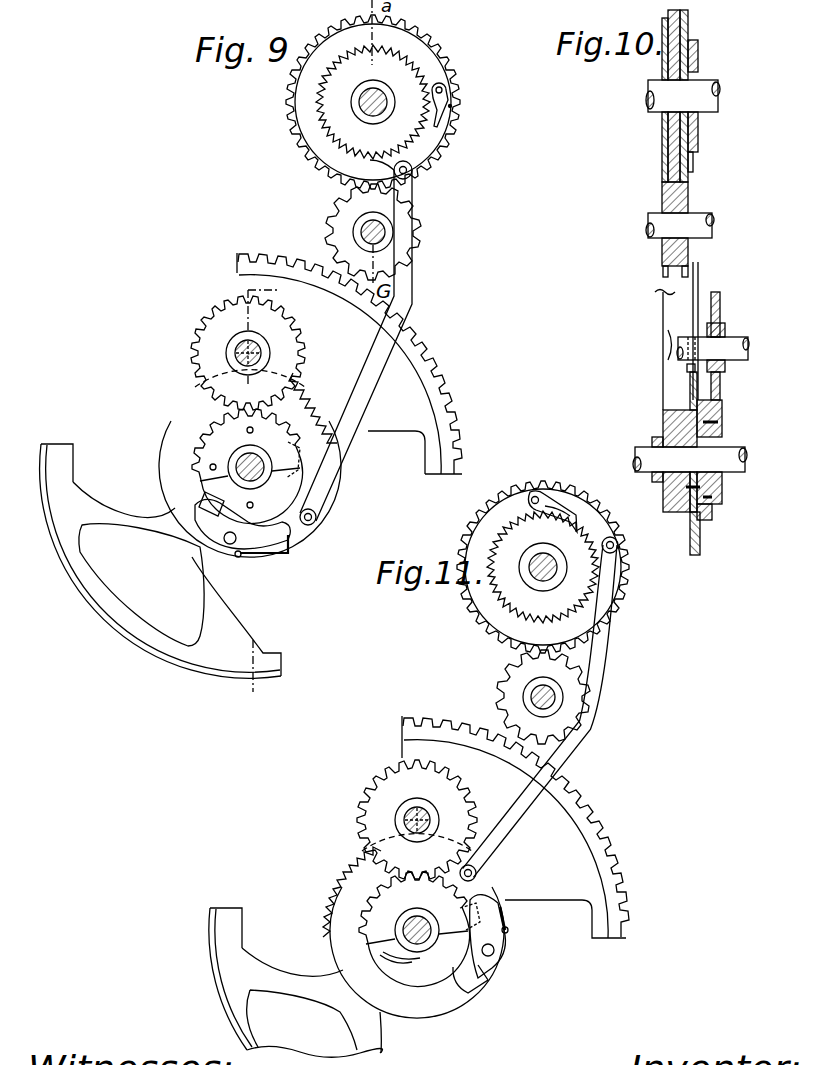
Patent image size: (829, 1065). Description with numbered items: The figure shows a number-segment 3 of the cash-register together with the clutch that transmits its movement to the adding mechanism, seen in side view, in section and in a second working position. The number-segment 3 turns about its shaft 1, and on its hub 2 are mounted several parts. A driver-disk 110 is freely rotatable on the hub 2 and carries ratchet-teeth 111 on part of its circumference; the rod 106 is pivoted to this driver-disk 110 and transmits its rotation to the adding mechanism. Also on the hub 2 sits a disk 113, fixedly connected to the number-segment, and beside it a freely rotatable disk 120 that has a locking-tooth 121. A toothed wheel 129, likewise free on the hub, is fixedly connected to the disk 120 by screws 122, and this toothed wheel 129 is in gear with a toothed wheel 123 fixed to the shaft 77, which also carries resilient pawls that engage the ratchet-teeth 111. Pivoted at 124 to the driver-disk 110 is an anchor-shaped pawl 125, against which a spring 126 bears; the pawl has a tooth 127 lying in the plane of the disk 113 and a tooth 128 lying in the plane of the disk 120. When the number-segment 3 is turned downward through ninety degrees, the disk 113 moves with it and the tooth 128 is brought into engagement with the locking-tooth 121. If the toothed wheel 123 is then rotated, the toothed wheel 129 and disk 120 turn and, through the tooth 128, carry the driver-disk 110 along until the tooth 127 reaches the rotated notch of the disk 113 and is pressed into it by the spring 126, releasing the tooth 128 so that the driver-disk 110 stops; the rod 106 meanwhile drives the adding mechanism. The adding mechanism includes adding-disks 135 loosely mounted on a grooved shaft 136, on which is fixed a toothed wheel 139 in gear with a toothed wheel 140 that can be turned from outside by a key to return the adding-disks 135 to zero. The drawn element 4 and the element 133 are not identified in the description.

In FIG. 9, the shaft 1 is at (250, 458).
In FIG. 11, the shaft 1 is at (425, 918).
In FIG. 9, the number-segment hub 2 is at (260, 480).
In FIG. 10, the number-segment hub 2 is at (745, 478).
In FIG. 11, the number-segment hub 2 is at (400, 925).
In FIG. 9, the number-segment 3 is at (160, 585).
In FIG. 11, the number-segment 3 is at (242, 1013).
In FIG. 9, the toothed sector plate 4 is at (349, 363).
In FIG. 10, the toothed sector plate 4 is at (668, 304).
In FIG. 11, the toothed sector plate 4 is at (515, 827).
In FIG. 9, the shaft 77 is at (262, 352).
In FIG. 10, the shaft 77 is at (748, 349).
In FIG. 11, the shaft 77 is at (432, 820).
In FIG. 9, the rod 106 is at (412, 283).
In FIG. 10, the rod 106 is at (700, 279).
In FIG. 11, the rod 106 is at (600, 658).
In FIG. 9, the driver-disk 110 is at (172, 440).
In FIG. 10, the driver-disk 110 is at (692, 538).
In FIG. 11, the driver-disk 110 is at (338, 945).
In FIG. 9, the ratchet-teeth 111 is at (313, 413).
In FIG. 10, the ratchet-teeth 111 is at (690, 378).
In FIG. 11, the ratchet-teeth 111 is at (352, 880).
In FIG. 10, the disk 113 is at (705, 512).
In FIG. 11, the disk 113 is at (382, 955).
In FIG. 9, the disk 120 is at (222, 490).
In FIG. 10, the disk 120 is at (722, 500).
In FIG. 11, the disk 120 is at (412, 970).
In FIG. 11, the locking-tooth 121 is at (383, 952).
In FIG. 10, the screws 122 is at (718, 423).
In FIG. 9, the toothed wheel 123 is at (275, 327).
In FIG. 10, the toothed wheel 123 is at (722, 310).
In FIG. 11, the toothed wheel 123 is at (432, 778).
In FIG. 9, the pivot 124 is at (230, 545).
In FIG. 11, the pivot 124 is at (495, 950).
In FIG. 9, the anchor-shaped pawl 125 is at (285, 547).
In FIG. 11, the anchor-shaped pawl 125 is at (490, 968).
In FIG. 9, the spring 126 is at (247, 560).
In FIG. 11, the spring 126 is at (507, 930).
In FIG. 9, the tooth 127 is at (290, 523).
In FIG. 11, the tooth 127 is at (497, 900).
In FIG. 9, the tooth 128 is at (212, 500).
In FIG. 11, the tooth 128 is at (465, 987).
In FIG. 9, the toothed wheel 129 is at (205, 432).
In FIG. 10, the toothed wheel 129 is at (722, 410).
In FIG. 11, the toothed wheel 129 is at (367, 912).
In FIG. 10, the block 133 is at (687, 368).
In FIG. 10, the adding-disk 135 is at (690, 28).
In FIG. 11, the adding-disk 135 is at (582, 506).
In FIG. 10, the shaft 136 is at (718, 100).
In FIG. 11, the shaft 136 is at (558, 566).
In FIG. 11, the toothed wheel 139 is at (622, 575).
In FIG. 11, the toothed wheel 140 is at (505, 689).